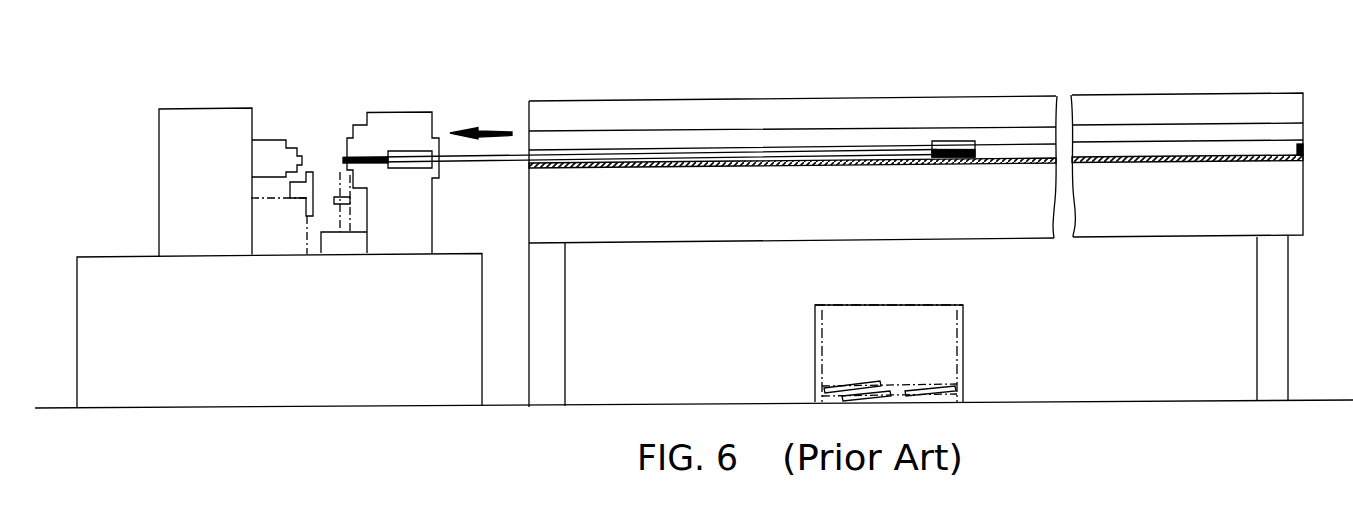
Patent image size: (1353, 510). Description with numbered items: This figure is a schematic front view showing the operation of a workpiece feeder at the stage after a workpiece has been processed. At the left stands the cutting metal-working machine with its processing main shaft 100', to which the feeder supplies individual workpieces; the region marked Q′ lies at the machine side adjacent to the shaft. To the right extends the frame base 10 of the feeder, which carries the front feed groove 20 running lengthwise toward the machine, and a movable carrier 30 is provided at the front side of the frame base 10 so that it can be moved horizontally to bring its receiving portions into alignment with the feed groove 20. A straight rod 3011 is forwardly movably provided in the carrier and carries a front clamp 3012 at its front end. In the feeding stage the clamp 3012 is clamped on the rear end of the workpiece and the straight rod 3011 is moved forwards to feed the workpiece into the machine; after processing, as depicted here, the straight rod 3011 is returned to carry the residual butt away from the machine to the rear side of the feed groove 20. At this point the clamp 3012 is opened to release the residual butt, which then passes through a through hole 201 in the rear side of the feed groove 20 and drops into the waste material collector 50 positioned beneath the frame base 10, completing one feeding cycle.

The processing main shaft 100' is at (279, 229).
The cutting tool / tool holder Q′ is at (365, 150).
The front clamp 3012 is at (402, 152).
The frame base 10 is at (623, 113).
The straight rod 3011 is at (745, 158).
The front feed groove 20 is at (628, 168).
The through hole 201 is at (895, 165).
The movable carrier 30 is at (1248, 163).
The waste material collector 50 is at (960, 377).